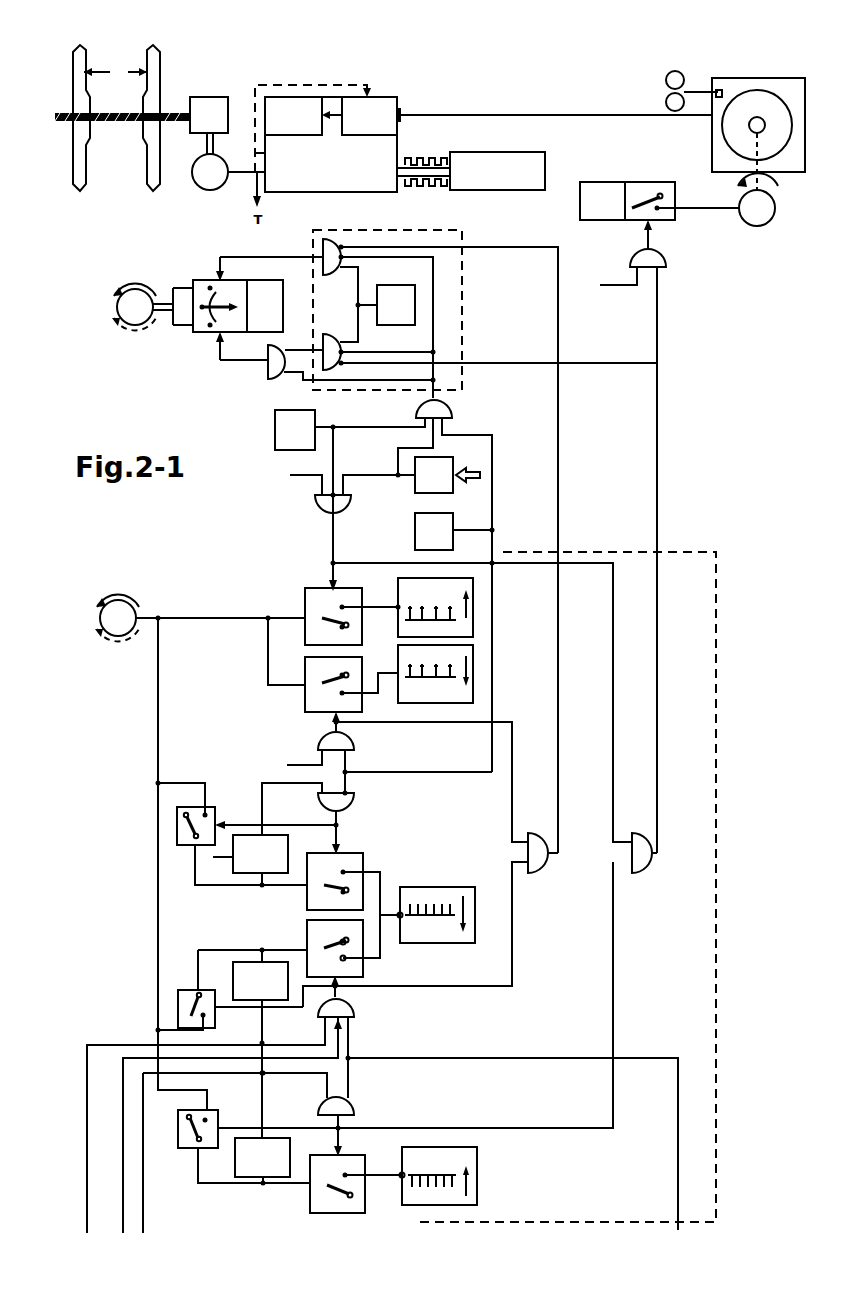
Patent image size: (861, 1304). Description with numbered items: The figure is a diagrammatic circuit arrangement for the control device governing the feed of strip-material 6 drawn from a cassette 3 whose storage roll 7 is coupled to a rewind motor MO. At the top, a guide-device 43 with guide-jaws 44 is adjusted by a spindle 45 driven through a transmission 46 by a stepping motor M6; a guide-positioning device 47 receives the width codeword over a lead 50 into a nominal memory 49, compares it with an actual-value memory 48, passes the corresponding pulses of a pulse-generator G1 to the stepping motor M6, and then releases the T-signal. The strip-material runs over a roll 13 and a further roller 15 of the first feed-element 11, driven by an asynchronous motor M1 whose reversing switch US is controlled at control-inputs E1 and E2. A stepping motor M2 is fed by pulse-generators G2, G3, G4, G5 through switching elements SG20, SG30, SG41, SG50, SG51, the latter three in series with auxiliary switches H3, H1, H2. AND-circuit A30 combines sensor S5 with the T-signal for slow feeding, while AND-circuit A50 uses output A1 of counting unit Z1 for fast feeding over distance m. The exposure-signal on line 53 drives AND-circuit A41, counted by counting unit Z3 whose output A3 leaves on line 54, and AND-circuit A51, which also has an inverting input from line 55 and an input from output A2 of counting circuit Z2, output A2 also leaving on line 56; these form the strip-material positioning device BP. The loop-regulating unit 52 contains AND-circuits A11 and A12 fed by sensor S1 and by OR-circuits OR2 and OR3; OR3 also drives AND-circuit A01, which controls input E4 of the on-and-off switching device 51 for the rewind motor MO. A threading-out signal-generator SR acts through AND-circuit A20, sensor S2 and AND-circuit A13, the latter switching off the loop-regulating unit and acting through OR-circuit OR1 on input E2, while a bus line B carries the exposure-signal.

The cassette 3 is at (790, 80).
The strip-material 6 is at (696, 91).
The storage roll 7 is at (761, 92).
The first feed-element 11 is at (602, 78).
The roll 13 is at (666, 103).
The feed roller 15 is at (668, 74).
The guide-device 43 is at (133, 114).
The guide-jaws 44 is at (150, 172).
The spindle 45 is at (170, 108).
The transmission 46 is at (214, 108).
The guide-positioning device 47 is at (284, 183).
The actual-value memory 48 is at (276, 100).
The nominal memory 49 is at (383, 102).
The lead 50 is at (480, 115).
The on-and-off switching device 51 is at (618, 185).
The loop-regulating unit 52 is at (485, 541).
The line 53 is at (678, 1156).
The line 54 is at (143, 1186).
The line 55 is at (122, 1224).
The line 56 is at (82, 1213).
The stepping motor M6 is at (210, 190).
The rewind motor MO is at (748, 226).
The asynchronous motor M1 is at (117, 307).
The stepping motor M2 is at (100, 623).
The pulse-generator G1 is at (546, 165).
The pulse-generator G2 is at (474, 613).
The pulse-generator G3 is at (474, 680).
The pulse-generator G4 is at (479, 1189).
The pulse-generator G5 is at (432, 887).
The control-input E1 is at (216, 276).
The control-input E2 is at (229, 337).
The control-input E4 is at (652, 224).
The reversing switch US is at (208, 334).
The OR-circuit OR1 is at (278, 379).
The OR-circuit OR2 is at (543, 875).
The OR-circuit OR3 is at (652, 875).
The AND-circuit A01 is at (665, 266).
The AND-circuit A11 is at (328, 272).
The AND-circuit A12 is at (328, 338).
The AND-circuit A13 is at (451, 406).
The AND-circuit A20 is at (330, 511).
The AND-circuit A30 is at (350, 734).
The AND-circuit A50 is at (351, 800).
The AND-circuit A51 is at (352, 1004).
The AND-circuit A41 is at (353, 1104).
The signal-output A1 is at (262, 833).
The output A2 is at (264, 1002).
The output A3 is at (265, 1136).
The sensor S1 is at (406, 288).
The sensor S2 is at (275, 432).
The sensor S5 is at (415, 540).
The threading-out signal-generator SR is at (415, 486).
The switching element SG20 is at (305, 600).
The switching element SG30 is at (310, 706).
The switching element SG50 is at (307, 897).
The switching element SG51 is at (307, 930).
The switching element SG41 is at (310, 1200).
The auxiliary switch H1 is at (213, 808).
The auxiliary switch H2 is at (185, 990).
The auxiliary switch H3 is at (184, 1146).
The counting unit Z1 is at (288, 846).
The counting circuit Z2 is at (233, 976).
The counting unit Z3 is at (290, 1156).
The line B is at (513, 1135).
The strip-material positioning device BP is at (717, 808).